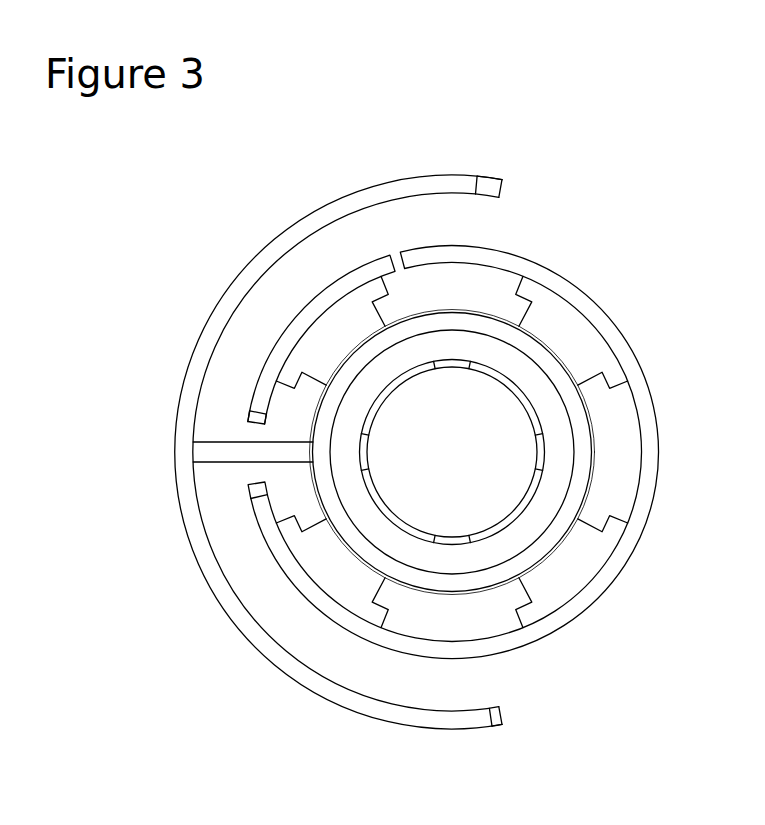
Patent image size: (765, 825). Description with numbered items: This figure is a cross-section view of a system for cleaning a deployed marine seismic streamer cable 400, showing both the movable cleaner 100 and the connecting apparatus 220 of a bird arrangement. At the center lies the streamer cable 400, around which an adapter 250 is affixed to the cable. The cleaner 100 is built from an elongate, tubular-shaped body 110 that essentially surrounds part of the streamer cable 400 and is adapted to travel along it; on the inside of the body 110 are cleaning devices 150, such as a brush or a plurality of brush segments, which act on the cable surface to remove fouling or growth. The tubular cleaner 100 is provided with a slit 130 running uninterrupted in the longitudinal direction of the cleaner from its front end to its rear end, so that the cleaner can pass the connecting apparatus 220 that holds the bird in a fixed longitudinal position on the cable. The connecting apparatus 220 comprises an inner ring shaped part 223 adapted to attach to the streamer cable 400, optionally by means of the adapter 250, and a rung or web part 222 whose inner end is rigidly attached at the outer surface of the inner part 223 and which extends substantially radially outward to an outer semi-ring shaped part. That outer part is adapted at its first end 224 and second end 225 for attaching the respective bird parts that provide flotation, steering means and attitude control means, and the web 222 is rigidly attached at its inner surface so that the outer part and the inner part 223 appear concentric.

The movable cleaner 100 is at (417, 433).
The tubular-shaped body 110 is at (406, 452).
The slit 130 is at (248, 423).
The cleaning devices 150 is at (548, 345).
The connecting apparatus 220 is at (344, 451).
The rung or web part 222 is at (238, 450).
The inner ring shaped part 223 is at (327, 483).
The first end 224 is at (505, 191).
The second end 225 is at (494, 717).
The adapter 250 is at (576, 443).
The streamer cable 400 is at (453, 443).